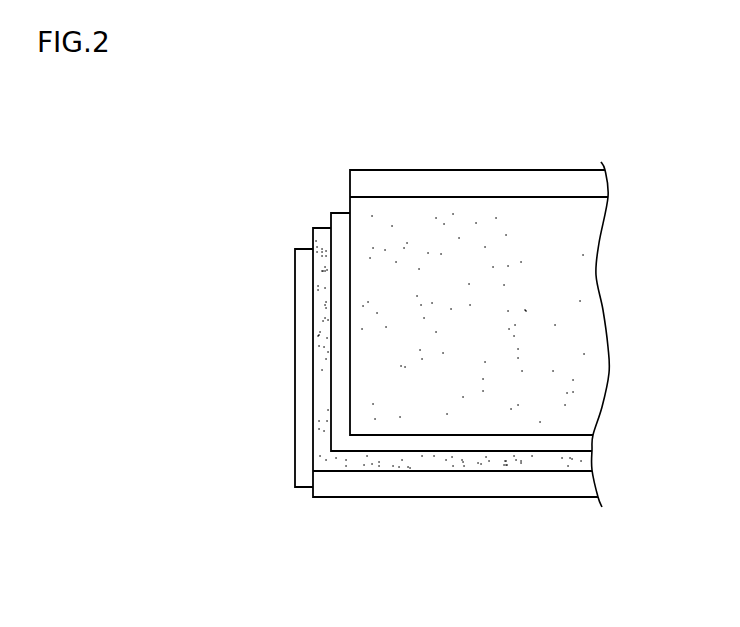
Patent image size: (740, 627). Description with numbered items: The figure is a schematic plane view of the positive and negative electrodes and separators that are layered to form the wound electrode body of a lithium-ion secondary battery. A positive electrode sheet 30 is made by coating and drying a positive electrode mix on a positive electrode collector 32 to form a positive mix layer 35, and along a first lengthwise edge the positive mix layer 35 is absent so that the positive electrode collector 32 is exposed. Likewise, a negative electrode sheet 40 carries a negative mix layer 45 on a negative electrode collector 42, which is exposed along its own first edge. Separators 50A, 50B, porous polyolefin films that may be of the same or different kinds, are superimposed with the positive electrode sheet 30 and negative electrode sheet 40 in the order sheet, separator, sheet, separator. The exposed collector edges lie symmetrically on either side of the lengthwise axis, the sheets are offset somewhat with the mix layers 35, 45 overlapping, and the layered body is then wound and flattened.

The positive electrode sheet 30 is at (449, 166).
The positive electrode collector 32 is at (573, 180).
The positive mix layer 35 is at (393, 220).
The negative electrode sheet 40 is at (455, 505).
The negative electrode collector 42 is at (378, 485).
The negative mix layer 45 is at (525, 463).
The separator 50A is at (340, 209).
The separator 50B is at (303, 245).